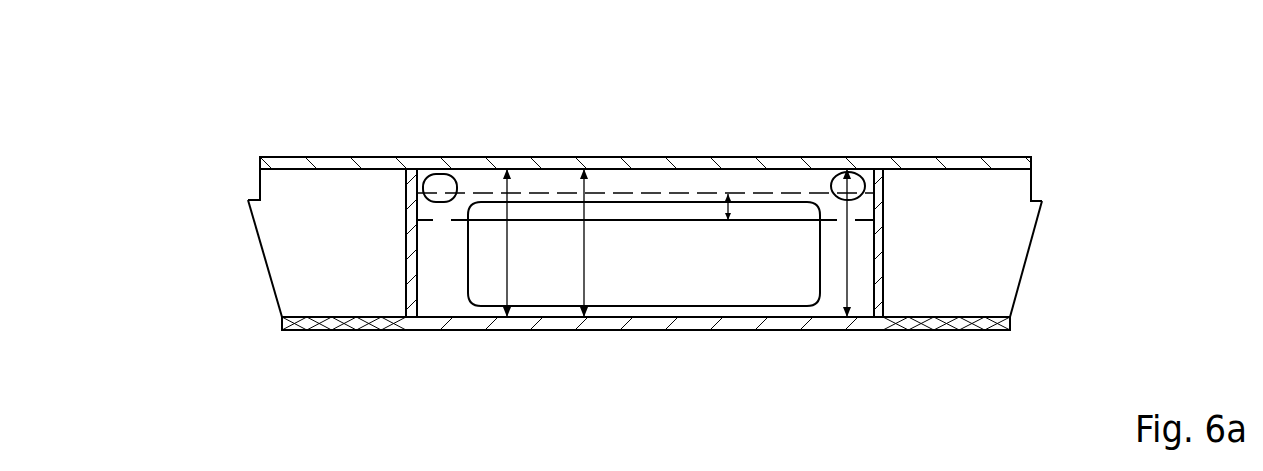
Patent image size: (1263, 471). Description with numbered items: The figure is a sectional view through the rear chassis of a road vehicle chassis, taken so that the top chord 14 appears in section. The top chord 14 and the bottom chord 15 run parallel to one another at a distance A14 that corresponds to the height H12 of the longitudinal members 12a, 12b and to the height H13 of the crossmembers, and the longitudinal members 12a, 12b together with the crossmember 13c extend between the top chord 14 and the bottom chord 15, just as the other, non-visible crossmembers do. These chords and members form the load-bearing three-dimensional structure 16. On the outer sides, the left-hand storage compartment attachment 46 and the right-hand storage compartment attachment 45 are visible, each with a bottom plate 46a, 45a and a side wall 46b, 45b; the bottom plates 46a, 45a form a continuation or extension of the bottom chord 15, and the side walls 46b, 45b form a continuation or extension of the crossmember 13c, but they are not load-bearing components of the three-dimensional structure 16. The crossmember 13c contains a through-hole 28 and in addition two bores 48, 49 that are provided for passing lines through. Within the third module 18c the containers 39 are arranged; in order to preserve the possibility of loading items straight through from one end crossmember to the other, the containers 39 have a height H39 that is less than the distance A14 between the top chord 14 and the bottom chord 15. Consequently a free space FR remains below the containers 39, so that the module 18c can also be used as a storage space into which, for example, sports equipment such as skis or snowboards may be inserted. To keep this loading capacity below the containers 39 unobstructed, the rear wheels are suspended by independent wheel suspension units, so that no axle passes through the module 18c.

The top chord 14 is at (806, 160).
The bottom chord 15 is at (763, 317).
The three-dimensional structure 16 is at (995, 126).
The left-hand storage compartment attachment 46 is at (238, 212).
The bottom plate 46a is at (307, 327).
The side wall 46b is at (297, 270).
The right-hand storage compartment attachment 45 is at (1047, 233).
The bottom plate 45a is at (980, 322).
The side wall 45b is at (975, 266).
The longitudinal member 12a is at (880, 233).
The longitudinal member 12b is at (413, 213).
The bore 49 is at (442, 187).
The bore 48 is at (855, 188).
The crossmember 13c is at (808, 187).
The container 39 is at (715, 212).
The through-hole 28 is at (663, 242).
The third module 18c is at (677, 292).
The free space FR is at (710, 252).
The distance between top chord and bottom chord A14 is at (508, 212).
The height of the crossmembers H13 is at (588, 212).
The height of the longitudinal members H12 is at (847, 293).
The height of the containers H39 is at (731, 205).